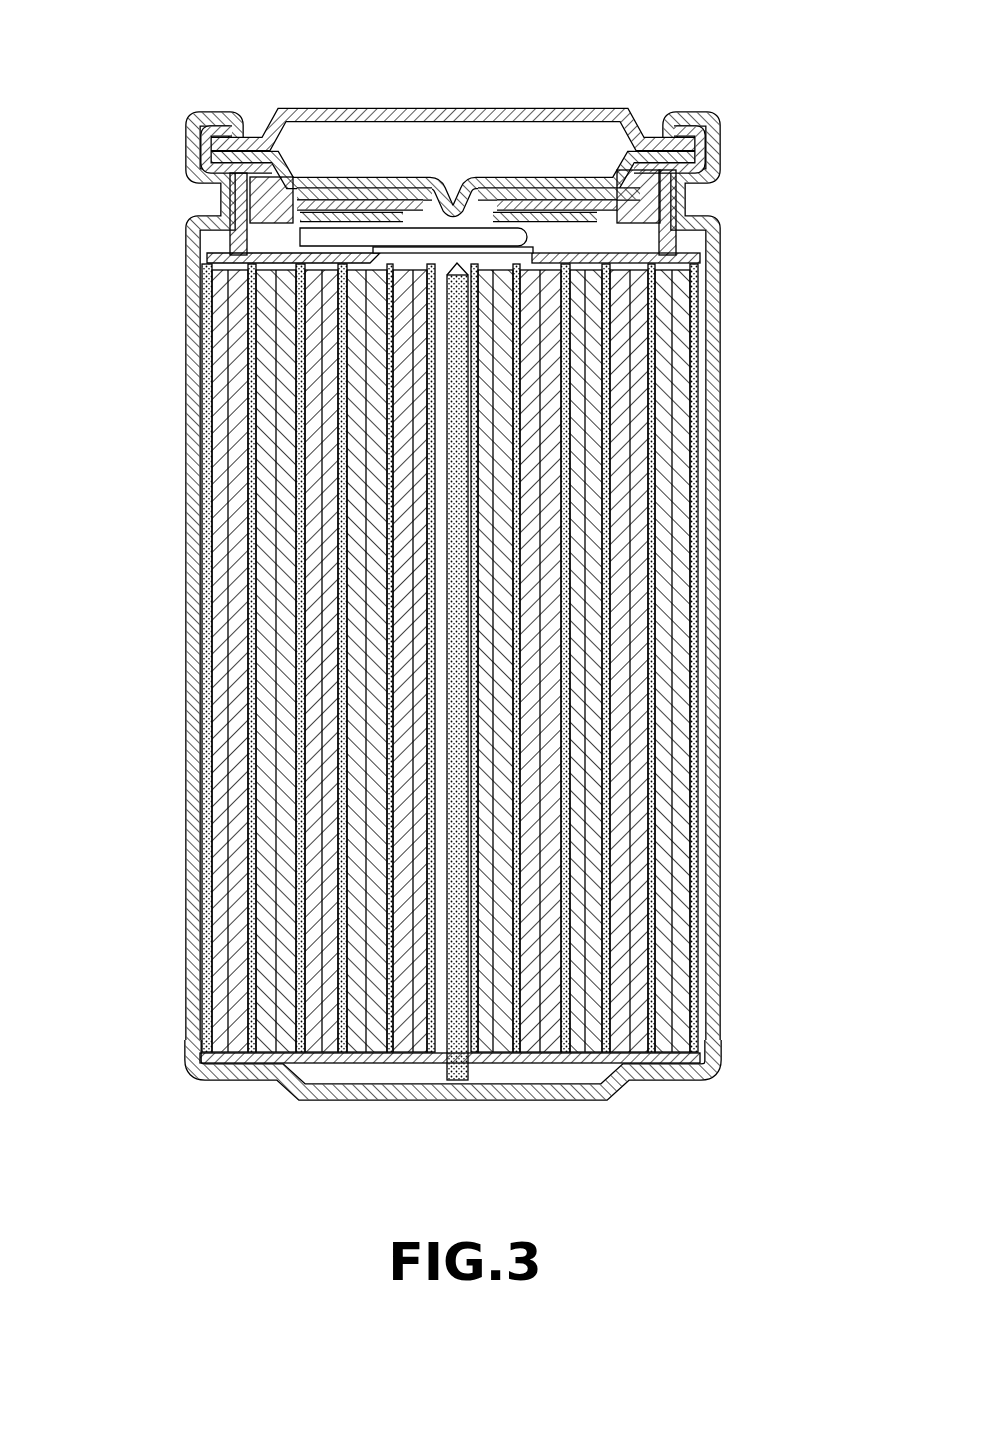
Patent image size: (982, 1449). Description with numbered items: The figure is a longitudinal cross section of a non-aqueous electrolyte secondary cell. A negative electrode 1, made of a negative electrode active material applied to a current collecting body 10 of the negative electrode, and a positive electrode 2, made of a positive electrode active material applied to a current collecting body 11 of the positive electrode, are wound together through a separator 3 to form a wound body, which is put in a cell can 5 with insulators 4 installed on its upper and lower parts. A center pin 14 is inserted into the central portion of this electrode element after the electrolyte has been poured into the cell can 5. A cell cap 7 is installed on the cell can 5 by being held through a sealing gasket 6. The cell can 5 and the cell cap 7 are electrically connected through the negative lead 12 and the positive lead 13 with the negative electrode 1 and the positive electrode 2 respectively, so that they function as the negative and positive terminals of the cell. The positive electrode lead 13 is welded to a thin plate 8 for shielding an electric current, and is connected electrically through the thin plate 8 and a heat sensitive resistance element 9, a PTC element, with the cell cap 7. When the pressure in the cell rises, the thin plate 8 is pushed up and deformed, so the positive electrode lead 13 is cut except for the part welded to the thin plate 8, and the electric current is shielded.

The negative electrode 1 is at (690, 388).
The positive electrode 2 is at (640, 578).
The separator 3 is at (660, 780).
The insulators 4 is at (668, 1080).
The cell can 5 is at (188, 440).
The sealing gasket 6 is at (188, 138).
The cell cap 7 is at (450, 106).
The thin plate for shielding an electric current 8 is at (500, 183).
The heat sensitive resistance element (PTC element) 9 is at (716, 152).
The current collecting body of the negative electrode 10 is at (225, 635).
The current collecting body of the positive electrode 11 is at (270, 828).
The negative lead 12 is at (297, 1087).
The positive electrode lead 13 is at (530, 233).
The center pin 14 is at (467, 1067).